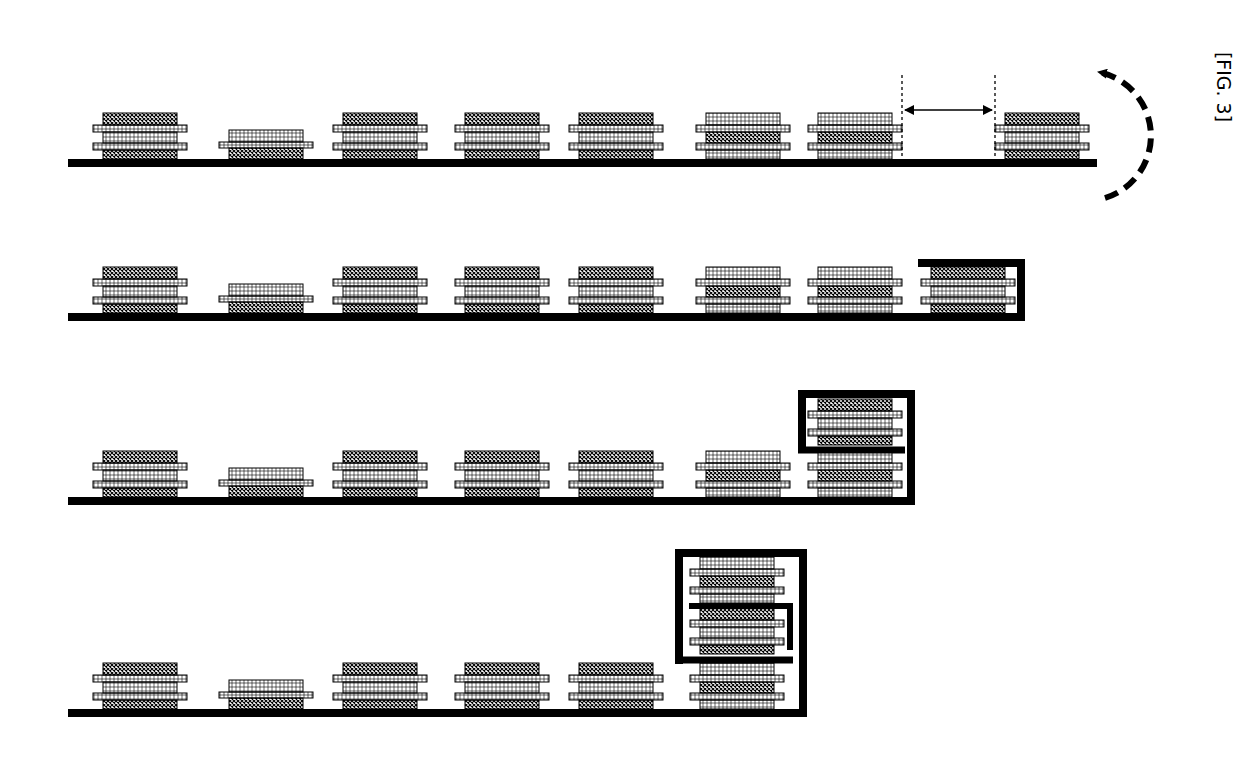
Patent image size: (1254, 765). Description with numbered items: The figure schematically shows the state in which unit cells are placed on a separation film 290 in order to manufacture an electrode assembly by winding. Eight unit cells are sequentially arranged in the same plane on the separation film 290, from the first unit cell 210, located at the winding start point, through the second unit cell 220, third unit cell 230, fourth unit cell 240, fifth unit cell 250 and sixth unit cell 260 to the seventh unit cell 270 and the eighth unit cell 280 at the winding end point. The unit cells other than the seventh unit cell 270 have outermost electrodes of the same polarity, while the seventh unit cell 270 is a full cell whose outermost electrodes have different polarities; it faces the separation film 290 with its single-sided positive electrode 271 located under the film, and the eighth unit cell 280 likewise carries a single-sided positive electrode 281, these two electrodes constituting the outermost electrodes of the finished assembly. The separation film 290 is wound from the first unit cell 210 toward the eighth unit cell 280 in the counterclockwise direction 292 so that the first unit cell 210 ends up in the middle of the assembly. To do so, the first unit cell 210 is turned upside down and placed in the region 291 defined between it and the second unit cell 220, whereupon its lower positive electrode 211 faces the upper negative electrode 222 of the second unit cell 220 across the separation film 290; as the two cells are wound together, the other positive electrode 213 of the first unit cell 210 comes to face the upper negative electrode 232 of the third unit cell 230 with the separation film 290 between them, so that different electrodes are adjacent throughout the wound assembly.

The first unit cell 210 is at (1042, 113).
The positive electrode of the first unit cell 211 is at (945, 268).
The positive electrode of the first unit cell 213 is at (1012, 113).
The second unit cell 220 is at (855, 113).
The negative electrode of the second unit cell 222 is at (820, 113).
The third unit cell 230 is at (737, 281).
The negative electrode of the third unit cell 232 is at (735, 268).
The fourth unit cell 240 is at (620, 387).
The fifth unit cell 250 is at (503, 387).
The sixth unit cell 260 is at (382, 387).
The seventh unit cell 270 is at (267, 394).
The positive electrode of the seventh unit cell 271 is at (218, 166).
The eighth unit cell 280 is at (144, 387).
The positive electrode of the eighth unit cell 281 is at (93, 166).
The separation film 290 is at (582, 186).
The region 291 is at (948, 116).
The counterclockwise direction 292 is at (1124, 155).